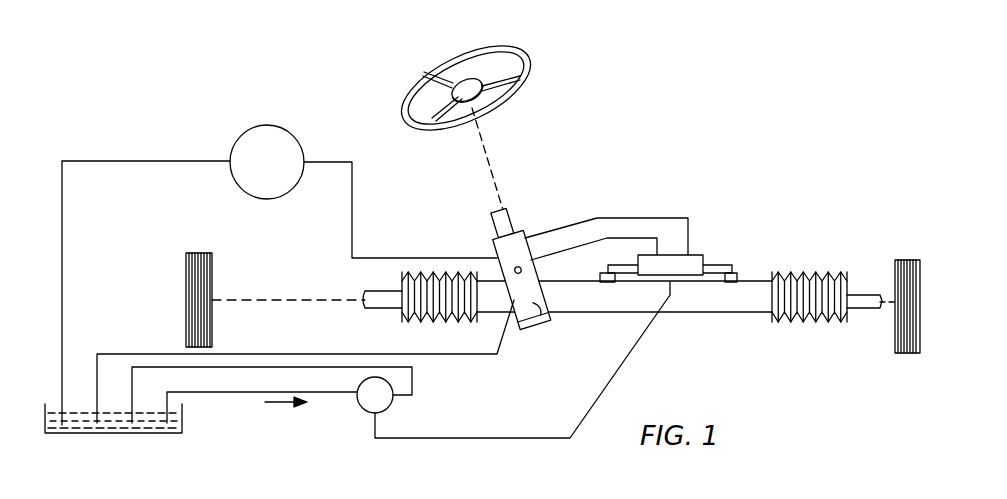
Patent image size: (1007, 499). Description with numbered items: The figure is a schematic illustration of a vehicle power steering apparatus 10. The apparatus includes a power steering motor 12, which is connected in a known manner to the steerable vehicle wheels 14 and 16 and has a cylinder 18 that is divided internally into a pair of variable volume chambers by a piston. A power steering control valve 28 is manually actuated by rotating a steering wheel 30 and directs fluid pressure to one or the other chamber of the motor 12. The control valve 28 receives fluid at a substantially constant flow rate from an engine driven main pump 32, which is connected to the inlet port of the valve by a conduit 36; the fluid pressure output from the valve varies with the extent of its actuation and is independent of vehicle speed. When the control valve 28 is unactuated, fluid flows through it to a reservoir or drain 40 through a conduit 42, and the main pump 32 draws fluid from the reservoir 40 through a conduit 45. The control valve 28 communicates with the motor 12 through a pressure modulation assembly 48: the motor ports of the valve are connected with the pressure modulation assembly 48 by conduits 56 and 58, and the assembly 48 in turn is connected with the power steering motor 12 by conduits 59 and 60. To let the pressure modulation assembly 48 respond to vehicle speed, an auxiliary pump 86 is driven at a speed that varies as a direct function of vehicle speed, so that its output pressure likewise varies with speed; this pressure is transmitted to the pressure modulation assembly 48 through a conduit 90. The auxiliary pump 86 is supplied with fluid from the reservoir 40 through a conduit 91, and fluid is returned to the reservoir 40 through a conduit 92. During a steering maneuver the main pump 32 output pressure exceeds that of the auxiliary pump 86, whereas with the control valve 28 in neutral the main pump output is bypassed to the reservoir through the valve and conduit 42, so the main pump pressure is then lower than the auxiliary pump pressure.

The power steering apparatus 10 is at (700, 93).
The power steering motor 12 is at (731, 313).
The steerable vehicle wheel 14 is at (194, 253).
The steerable vehicle wheel 16 is at (901, 260).
The cylinder 18 is at (622, 297).
The power steering control valve 28 is at (518, 275).
The steering wheel 30 is at (530, 62).
The main pump 32 is at (250, 142).
The conduit 36 is at (354, 200).
The reservoir 40 is at (88, 435).
The conduit 42 is at (132, 354).
The conduit 45 is at (95, 161).
The pressure modulation assembly 48 is at (693, 263).
The conduit 56 is at (594, 217).
The conduit 58 is at (590, 243).
The conduit 59 is at (728, 264).
The conduit 60 is at (627, 265).
The auxiliary pump 86 is at (363, 404).
The conduit 90 is at (609, 391).
The conduit 91 is at (235, 393).
The conduit 92 is at (413, 378).